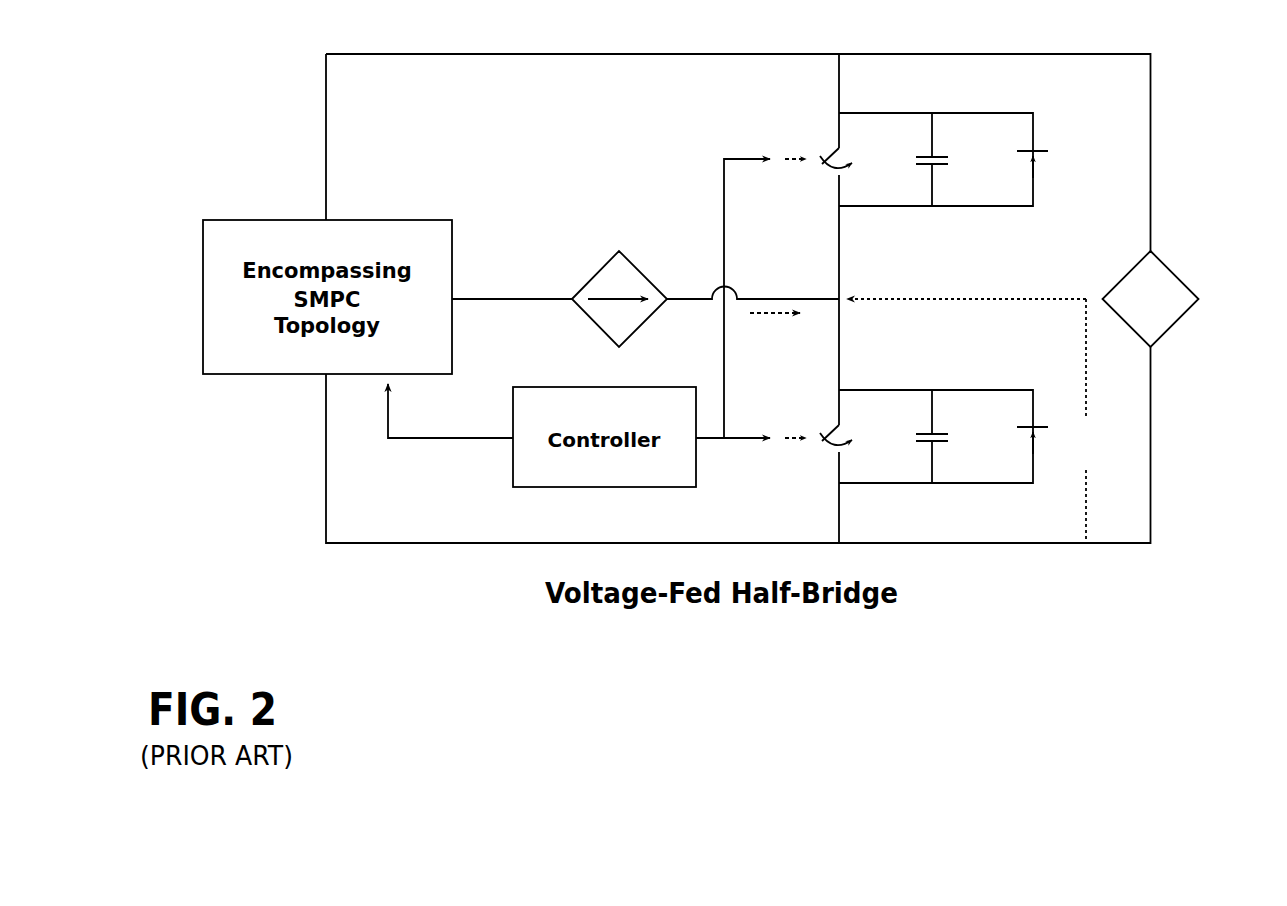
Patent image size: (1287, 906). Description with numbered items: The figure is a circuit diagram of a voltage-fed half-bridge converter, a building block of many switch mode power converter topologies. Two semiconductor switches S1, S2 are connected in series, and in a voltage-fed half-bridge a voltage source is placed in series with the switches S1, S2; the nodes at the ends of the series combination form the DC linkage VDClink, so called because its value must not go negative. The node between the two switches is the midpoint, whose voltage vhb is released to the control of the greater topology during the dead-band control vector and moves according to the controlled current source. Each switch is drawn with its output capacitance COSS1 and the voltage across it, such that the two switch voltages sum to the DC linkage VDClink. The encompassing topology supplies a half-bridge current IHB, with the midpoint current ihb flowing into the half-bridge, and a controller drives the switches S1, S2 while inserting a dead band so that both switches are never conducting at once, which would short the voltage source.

The switch S1 is at (820, 147).
The switch S2 is at (820, 424).
The switch output capacitance COSS1 is at (943, 298).
The DC linkage VDClink is at (1182, 299).
The half-bridge input current source IHB is at (645, 299).
The half-bridge current ihb is at (775, 332).
The half-bridge midpoint voltage vhb is at (975, 421).